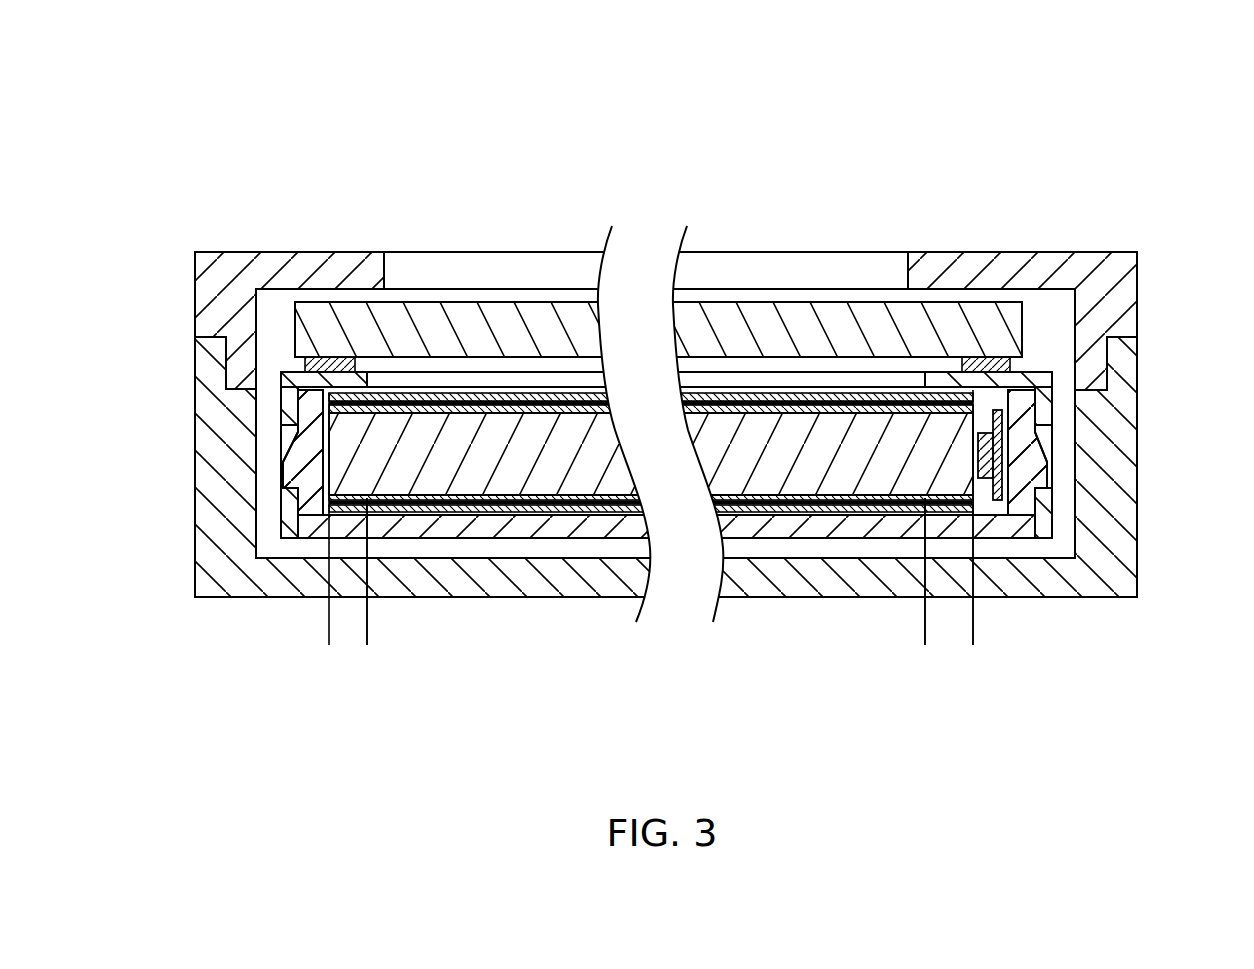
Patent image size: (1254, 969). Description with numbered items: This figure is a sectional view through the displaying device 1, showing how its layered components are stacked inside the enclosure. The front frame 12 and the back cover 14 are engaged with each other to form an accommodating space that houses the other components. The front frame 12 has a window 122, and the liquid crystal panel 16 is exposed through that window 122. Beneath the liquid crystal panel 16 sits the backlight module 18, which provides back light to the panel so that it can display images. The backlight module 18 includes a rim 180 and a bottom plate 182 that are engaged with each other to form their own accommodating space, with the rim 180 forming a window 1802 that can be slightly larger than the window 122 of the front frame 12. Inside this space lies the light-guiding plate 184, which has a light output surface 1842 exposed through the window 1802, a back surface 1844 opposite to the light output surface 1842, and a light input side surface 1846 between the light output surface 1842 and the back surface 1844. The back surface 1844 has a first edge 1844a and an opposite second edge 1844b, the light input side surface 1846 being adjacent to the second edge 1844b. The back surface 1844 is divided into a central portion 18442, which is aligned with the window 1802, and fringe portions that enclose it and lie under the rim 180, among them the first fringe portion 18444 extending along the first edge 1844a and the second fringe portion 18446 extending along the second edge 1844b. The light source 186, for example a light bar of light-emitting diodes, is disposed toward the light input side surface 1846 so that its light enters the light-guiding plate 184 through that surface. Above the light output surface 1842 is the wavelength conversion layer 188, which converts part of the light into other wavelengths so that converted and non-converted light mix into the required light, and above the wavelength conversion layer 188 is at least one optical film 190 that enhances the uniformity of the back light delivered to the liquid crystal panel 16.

The displaying device 1 is at (1145, 113).
The front frame 12 is at (1038, 260).
The window 122 is at (860, 262).
The back cover 14 is at (1115, 497).
The liquid crystal panel 16 is at (712, 313).
The backlight module 18 is at (1048, 348).
The rim 180 is at (945, 380).
The window 1802 is at (864, 380).
The bottom plate 182 is at (997, 530).
The light-guiding plate 184 is at (352, 459).
The light output surface 1842 is at (497, 408).
The back surface 1844 is at (988, 708).
The first edge 1844a is at (323, 500).
The second edge 1844b is at (975, 500).
The first fringe portion 18444 is at (329, 636).
The central portion 18442 is at (367, 636).
The second fringe portion 18446 is at (973, 636).
The light input side surface 1846 is at (973, 483).
The light source 186 is at (990, 455).
The wavelength conversion layer 188 is at (742, 400).
The optical film 190 is at (787, 405).